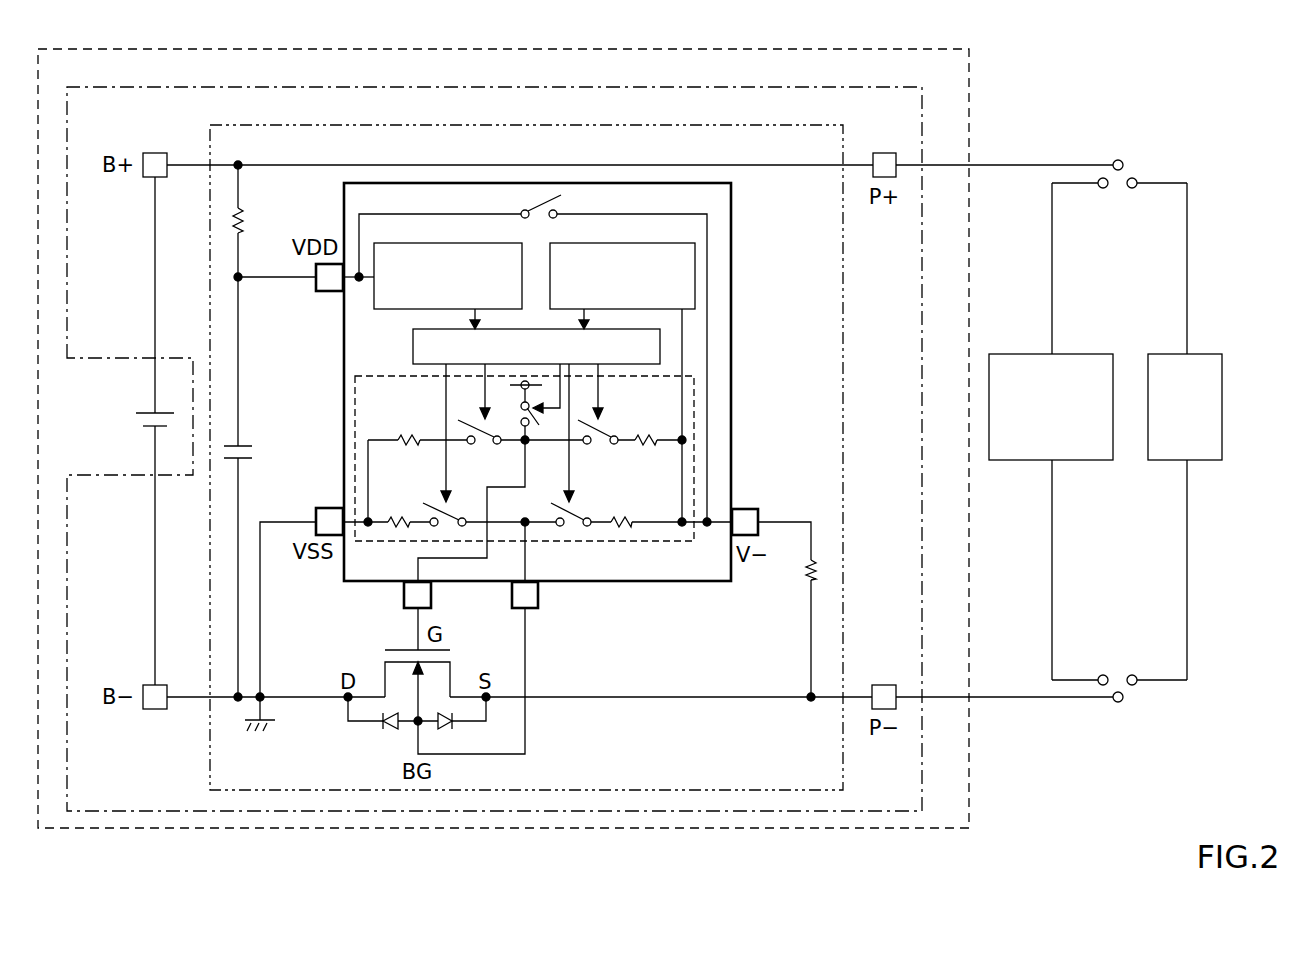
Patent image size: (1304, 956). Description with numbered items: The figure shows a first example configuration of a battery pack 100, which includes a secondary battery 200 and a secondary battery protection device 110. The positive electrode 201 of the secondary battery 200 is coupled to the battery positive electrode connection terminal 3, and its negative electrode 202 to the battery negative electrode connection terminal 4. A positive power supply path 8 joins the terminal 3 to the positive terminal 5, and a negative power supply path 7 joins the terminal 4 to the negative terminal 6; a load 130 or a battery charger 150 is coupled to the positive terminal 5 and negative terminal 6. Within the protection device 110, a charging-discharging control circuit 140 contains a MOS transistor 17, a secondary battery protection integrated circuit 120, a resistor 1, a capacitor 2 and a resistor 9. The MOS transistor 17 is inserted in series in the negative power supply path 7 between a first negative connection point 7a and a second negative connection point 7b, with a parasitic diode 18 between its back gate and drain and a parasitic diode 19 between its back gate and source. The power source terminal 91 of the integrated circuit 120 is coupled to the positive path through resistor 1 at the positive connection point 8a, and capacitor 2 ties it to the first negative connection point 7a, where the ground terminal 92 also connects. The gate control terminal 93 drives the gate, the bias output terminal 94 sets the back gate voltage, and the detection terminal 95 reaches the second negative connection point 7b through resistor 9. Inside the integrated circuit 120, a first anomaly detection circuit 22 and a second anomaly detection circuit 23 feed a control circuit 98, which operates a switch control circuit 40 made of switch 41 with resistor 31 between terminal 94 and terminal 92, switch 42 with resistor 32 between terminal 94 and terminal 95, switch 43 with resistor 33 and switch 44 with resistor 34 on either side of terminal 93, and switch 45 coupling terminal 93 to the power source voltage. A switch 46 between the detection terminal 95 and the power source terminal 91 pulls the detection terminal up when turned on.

The resistor 1 is at (243, 217).
The capacitor 2 is at (240, 446).
The battery positive electrode connection terminal 3 is at (155, 153).
The battery negative electrode connection terminal 4 is at (155, 709).
The positive terminal 5 is at (884, 153).
The negative terminal 6 is at (884, 685).
The negative power supply path 7 is at (283, 697).
The first negative connection point 7a is at (263, 701).
The second negative connection point 7b is at (805, 700).
The positive power supply path 8 is at (350, 165).
The positive connection point 8a is at (241, 168).
The resistor 9 is at (808, 582).
The MOS transistor 17 is at (451, 670).
The parasitic diode 18 is at (380, 728).
The parasitic diode 19 is at (455, 728).
The first anomaly detection circuit 22 is at (470, 243).
The second anomaly detection circuit 23 is at (640, 243).
The resistor 31 is at (393, 514).
The resistor 32 is at (622, 514).
The resistor 33 is at (404, 432).
The resistor 34 is at (647, 434).
The switch control circuit 40 is at (640, 541).
The switch 41 is at (459, 514).
The switch 42 is at (583, 514).
The switch 43 is at (468, 428).
The switch 44 is at (606, 428).
The switch 45 is at (518, 424).
The switch 46 is at (525, 207).
The power source terminal 91 is at (327, 291).
The ground terminal 92 is at (327, 507).
The gate control terminal 93 is at (431, 590).
The bias output terminal 94 is at (538, 590).
The detection terminal 95 is at (758, 509).
The control circuit 98 is at (413, 345).
The battery pack 100 is at (969, 95).
The secondary battery protection device 110 is at (742, 87).
The secondary battery protection integrated circuit 120 is at (732, 235).
The load 130 is at (1195, 354).
The charging-discharging control circuit 140 is at (712, 125).
The battery charger 150 is at (1060, 354).
The secondary battery 200 is at (143, 418).
The positive electrode 201 is at (140, 411).
The negative electrode 202 is at (143, 428).